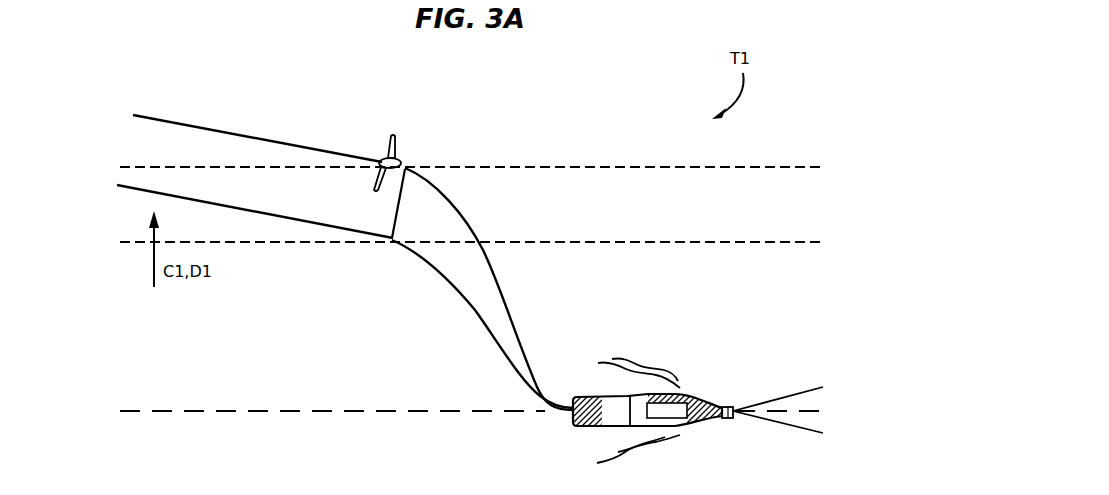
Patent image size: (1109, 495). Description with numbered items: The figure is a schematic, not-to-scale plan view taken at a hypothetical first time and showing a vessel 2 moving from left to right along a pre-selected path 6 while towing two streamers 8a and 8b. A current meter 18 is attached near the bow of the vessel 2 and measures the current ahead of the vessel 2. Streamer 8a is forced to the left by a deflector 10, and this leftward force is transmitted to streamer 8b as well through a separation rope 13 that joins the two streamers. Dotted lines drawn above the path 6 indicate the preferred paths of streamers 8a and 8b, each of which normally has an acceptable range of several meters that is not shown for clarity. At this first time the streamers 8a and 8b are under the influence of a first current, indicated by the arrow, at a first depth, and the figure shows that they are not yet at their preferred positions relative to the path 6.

The vessel 2 is at (708, 422).
The pre-selected path 6 is at (207, 411).
The streamer 8a is at (290, 145).
The streamer 8b is at (287, 220).
The deflector 10 is at (398, 142).
The separation rope 13 is at (390, 217).
The current meter 18 is at (725, 403).